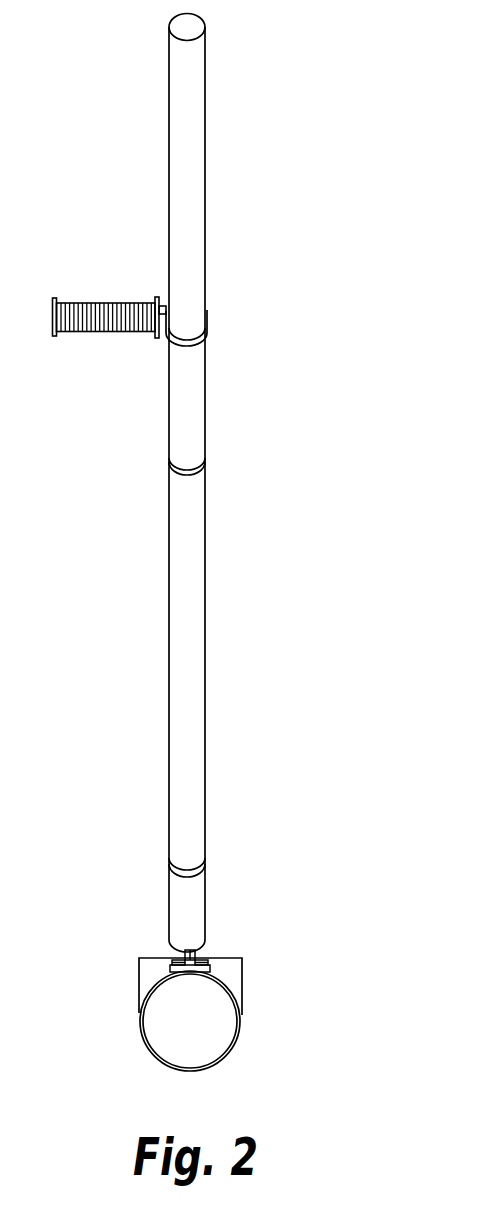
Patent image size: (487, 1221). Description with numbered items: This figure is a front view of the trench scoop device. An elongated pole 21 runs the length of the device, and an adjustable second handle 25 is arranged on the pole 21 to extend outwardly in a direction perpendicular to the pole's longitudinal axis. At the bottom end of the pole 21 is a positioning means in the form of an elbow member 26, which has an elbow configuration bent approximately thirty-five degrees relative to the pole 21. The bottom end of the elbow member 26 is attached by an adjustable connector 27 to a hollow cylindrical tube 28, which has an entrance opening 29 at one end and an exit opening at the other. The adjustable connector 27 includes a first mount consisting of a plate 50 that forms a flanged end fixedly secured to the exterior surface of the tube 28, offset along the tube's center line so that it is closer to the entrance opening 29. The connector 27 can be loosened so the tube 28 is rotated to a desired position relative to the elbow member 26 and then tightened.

The pole 21 is at (187, 417).
The adjustable second handle 25 is at (103, 303).
The elbow member 26 is at (197, 908).
The adjustable connector 27 is at (205, 957).
The plate 50 is at (208, 968).
The hollow cylindrical tube 28 is at (141, 1016).
The entrance opening 29 is at (197, 1047).